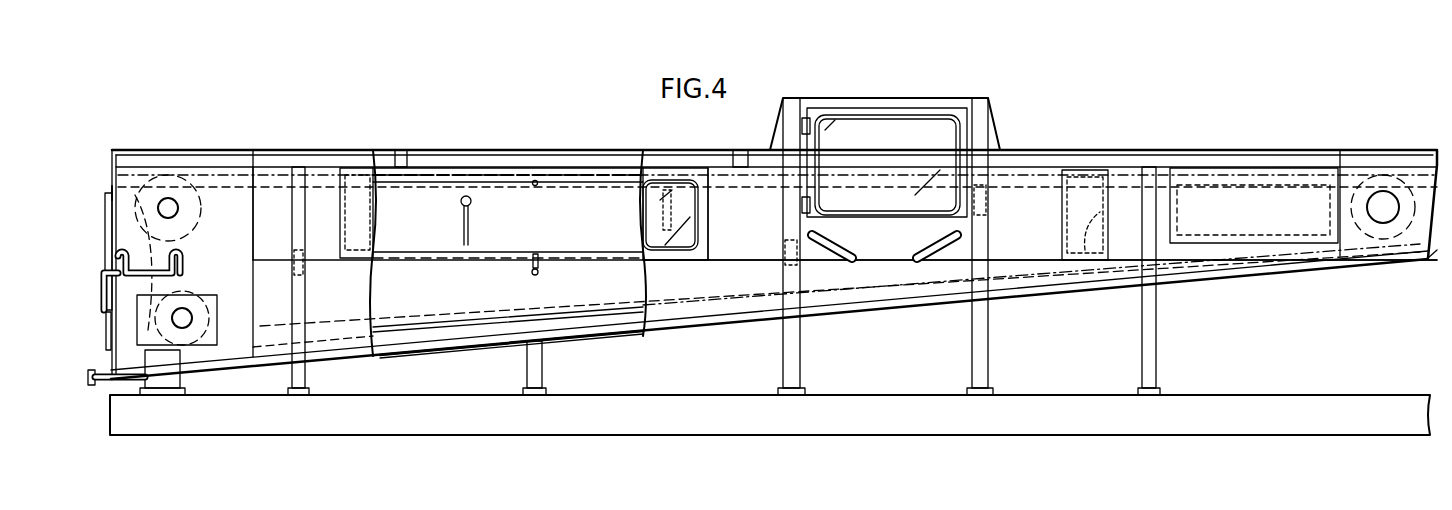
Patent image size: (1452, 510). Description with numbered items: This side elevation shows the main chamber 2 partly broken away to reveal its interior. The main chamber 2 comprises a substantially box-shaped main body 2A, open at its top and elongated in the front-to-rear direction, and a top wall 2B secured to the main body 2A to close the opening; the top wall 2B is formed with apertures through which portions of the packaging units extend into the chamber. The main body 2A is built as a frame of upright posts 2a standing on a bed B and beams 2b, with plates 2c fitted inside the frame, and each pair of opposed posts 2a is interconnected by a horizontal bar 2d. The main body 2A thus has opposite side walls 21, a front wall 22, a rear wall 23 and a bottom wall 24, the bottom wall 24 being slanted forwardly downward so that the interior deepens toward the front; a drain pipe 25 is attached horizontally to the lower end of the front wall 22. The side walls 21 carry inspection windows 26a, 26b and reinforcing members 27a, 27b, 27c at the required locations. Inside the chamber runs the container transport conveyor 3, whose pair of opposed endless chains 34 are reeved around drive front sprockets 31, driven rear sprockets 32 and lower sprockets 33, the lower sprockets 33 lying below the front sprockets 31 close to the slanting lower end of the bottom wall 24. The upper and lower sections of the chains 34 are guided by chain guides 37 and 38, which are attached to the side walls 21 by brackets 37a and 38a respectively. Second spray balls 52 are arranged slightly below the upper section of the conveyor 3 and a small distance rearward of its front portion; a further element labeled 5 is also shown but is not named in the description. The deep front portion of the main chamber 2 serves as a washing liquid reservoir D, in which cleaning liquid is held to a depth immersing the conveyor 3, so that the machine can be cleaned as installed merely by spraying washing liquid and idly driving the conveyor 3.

The main chamber 2 is at (1215, 140).
The top wall 2B is at (168, 150).
The reinforcing member 27c is at (236, 192).
The drive front sprocket 31 is at (140, 199).
The front wall 22 is at (111, 191).
The container transport conveyor 3 is at (138, 232).
The lower sprocket 33 is at (160, 327).
The drain pipe 25 is at (100, 384).
The upright post 2a is at (305, 380).
The horizontal bar 2d is at (300, 270).
The chain guide 37 is at (518, 182).
The endless chain 34 is at (590, 176).
The inspection window 26b is at (680, 197).
The beam 2b is at (703, 162).
The panel 5 is at (420, 253).
The second spray ball 52 is at (469, 206).
The bracket 37a is at (535, 186).
The side wall 21 is at (756, 236).
The washing liquid reservoir D is at (412, 322).
The main body 2A is at (492, 306).
The chain guide 38 is at (463, 333).
The plate 2c is at (613, 336).
The bracket 38a is at (795, 322).
The inspection window 26a is at (907, 154).
The reinforcing member 27b is at (1078, 196).
The reinforcing member 27a is at (1365, 163).
The driven rear sprocket 32 is at (1405, 187).
The rear wall 23 is at (1436, 233).
The bottom wall 24 is at (1257, 277).
The bed B is at (1218, 411).